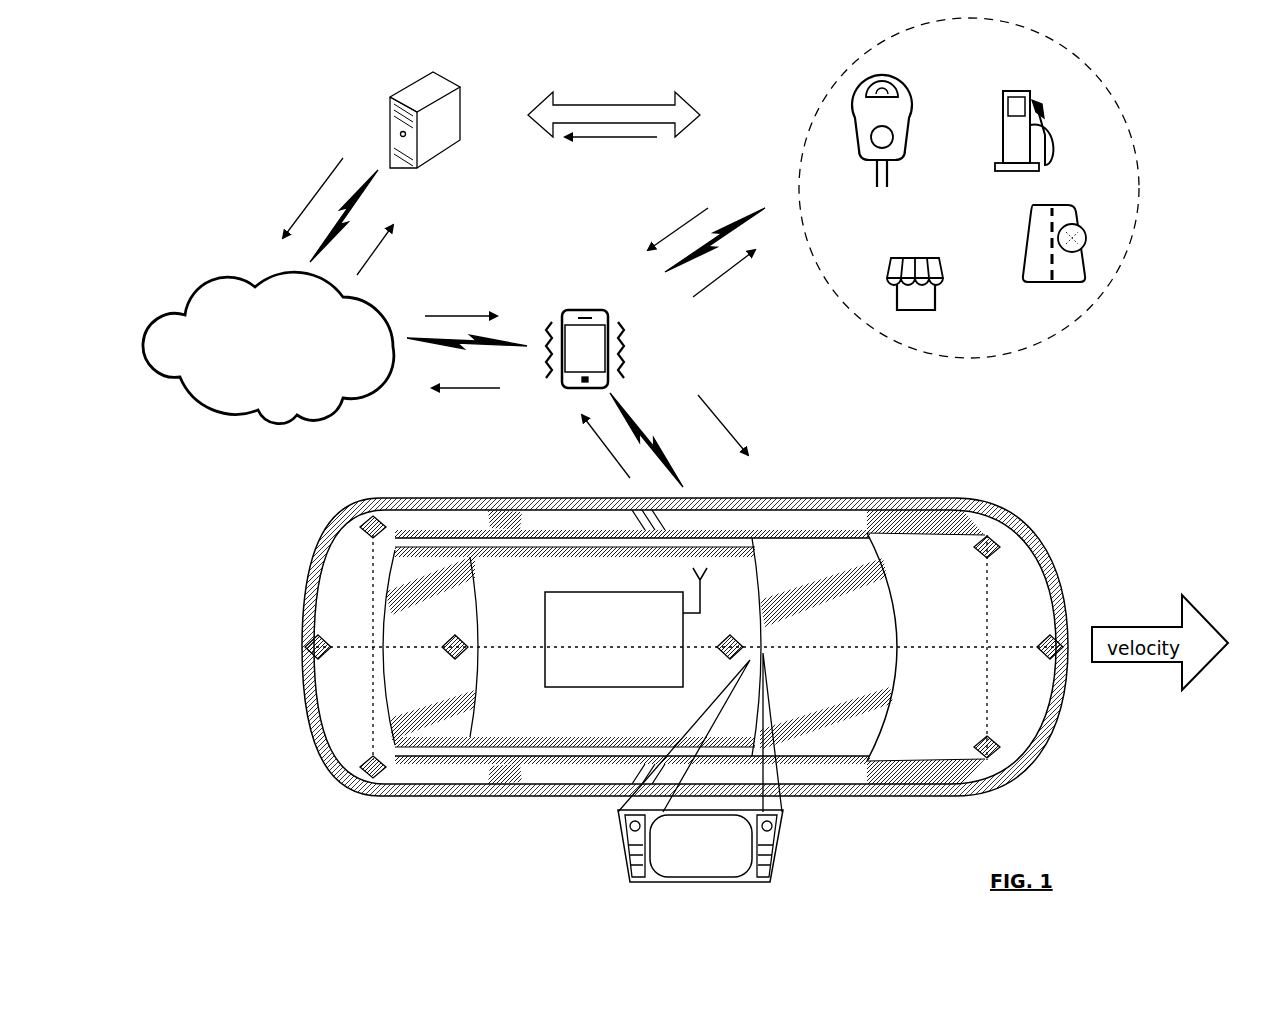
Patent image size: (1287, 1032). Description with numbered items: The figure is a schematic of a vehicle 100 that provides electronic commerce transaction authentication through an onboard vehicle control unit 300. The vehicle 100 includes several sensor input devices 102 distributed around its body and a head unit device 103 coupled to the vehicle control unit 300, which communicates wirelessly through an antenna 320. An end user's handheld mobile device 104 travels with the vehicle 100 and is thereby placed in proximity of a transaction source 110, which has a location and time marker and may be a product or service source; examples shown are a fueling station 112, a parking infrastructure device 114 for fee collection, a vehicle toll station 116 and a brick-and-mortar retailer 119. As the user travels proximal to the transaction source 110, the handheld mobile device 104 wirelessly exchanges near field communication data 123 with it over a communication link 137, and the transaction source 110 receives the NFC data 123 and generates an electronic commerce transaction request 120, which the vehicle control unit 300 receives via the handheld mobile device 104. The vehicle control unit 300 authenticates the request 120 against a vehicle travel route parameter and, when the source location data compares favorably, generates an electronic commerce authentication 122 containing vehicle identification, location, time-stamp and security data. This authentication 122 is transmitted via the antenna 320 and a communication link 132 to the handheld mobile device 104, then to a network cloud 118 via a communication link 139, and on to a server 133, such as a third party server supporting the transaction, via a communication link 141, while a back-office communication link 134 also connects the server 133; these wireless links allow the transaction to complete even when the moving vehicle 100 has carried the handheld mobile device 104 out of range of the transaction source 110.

The vehicle 100 is at (437, 793).
The sensor input devices 102 is at (372, 516).
The head unit device 103 is at (776, 860).
The handheld mobile device 104 is at (628, 352).
The transaction source 110 is at (1118, 100).
The fueling station 112 is at (1027, 90).
The parking infrastructure device 114 is at (862, 143).
The vehicle toll station 116 is at (1070, 222).
The network cloud 118 is at (268, 347).
The brick-and-mortar retailer 119 is at (942, 267).
The electronic commerce transaction request 120 is at (327, 187).
The electronic commerce authentication 122 is at (383, 233).
The near field communication data 123 is at (632, 137).
The communication link 132 is at (685, 437).
The server 133 is at (398, 90).
The communication link 134 is at (572, 103).
The communication link 137 is at (747, 218).
The communication link 139 is at (440, 347).
The communication link 141 is at (378, 170).
The vehicle control unit 300 is at (630, 690).
The antenna 320 is at (730, 590).